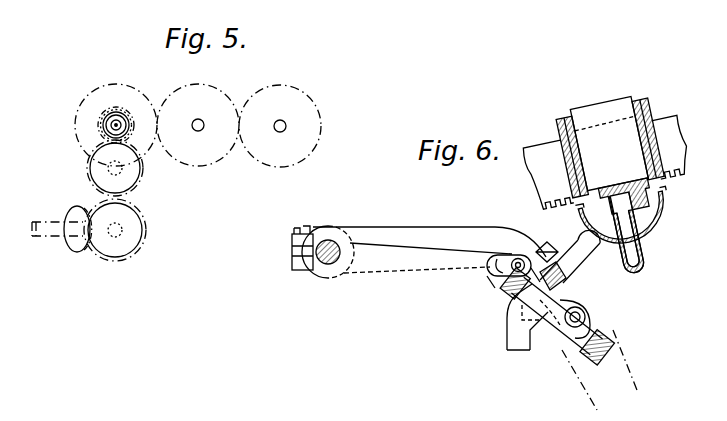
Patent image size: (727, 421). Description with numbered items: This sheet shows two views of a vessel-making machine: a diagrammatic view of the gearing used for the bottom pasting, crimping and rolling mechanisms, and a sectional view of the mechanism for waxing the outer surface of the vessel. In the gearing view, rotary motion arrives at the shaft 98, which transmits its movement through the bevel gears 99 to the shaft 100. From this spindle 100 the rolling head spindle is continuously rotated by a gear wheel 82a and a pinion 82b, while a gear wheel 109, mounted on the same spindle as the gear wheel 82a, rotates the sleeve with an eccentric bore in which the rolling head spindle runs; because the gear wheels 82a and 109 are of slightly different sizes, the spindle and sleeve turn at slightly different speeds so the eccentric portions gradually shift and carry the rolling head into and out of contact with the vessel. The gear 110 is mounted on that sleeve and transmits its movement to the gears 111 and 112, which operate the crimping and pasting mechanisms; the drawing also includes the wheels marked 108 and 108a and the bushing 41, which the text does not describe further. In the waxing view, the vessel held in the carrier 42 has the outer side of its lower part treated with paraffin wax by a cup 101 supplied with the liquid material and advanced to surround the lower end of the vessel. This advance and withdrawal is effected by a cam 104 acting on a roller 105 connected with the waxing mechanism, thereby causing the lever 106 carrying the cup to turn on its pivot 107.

In FIG. 6, the bushing 41 is at (598, 134).
In FIG. 6, the carrier 42 is at (600, 139).
In FIG. 5, the gear wheel 82a is at (148, 180).
In FIG. 5, the pinion 82b is at (108, 100).
In FIG. 5, the shaft 98 is at (56, 236).
In FIG. 5, the bevel gears 99 is at (114, 260).
In FIG. 5, the shaft 100 is at (126, 243).
In FIG. 6, the cup 101 is at (637, 226).
In FIG. 6, the cam 104 is at (621, 316).
In FIG. 6, the roller 105 is at (524, 298).
In FIG. 6, the lever 106 is at (452, 233).
In FIG. 6, the pivot 107 is at (333, 267).
In FIG. 5, the wheel 108 is at (155, 231).
In FIG. 5, the hub 108a is at (91, 121).
In FIG. 5, the gear wheel 109 is at (79, 170).
In FIG. 5, the gear 110 is at (128, 87).
In FIG. 5, the gear 111 is at (222, 92).
In FIG. 5, the gear 112 is at (307, 96).